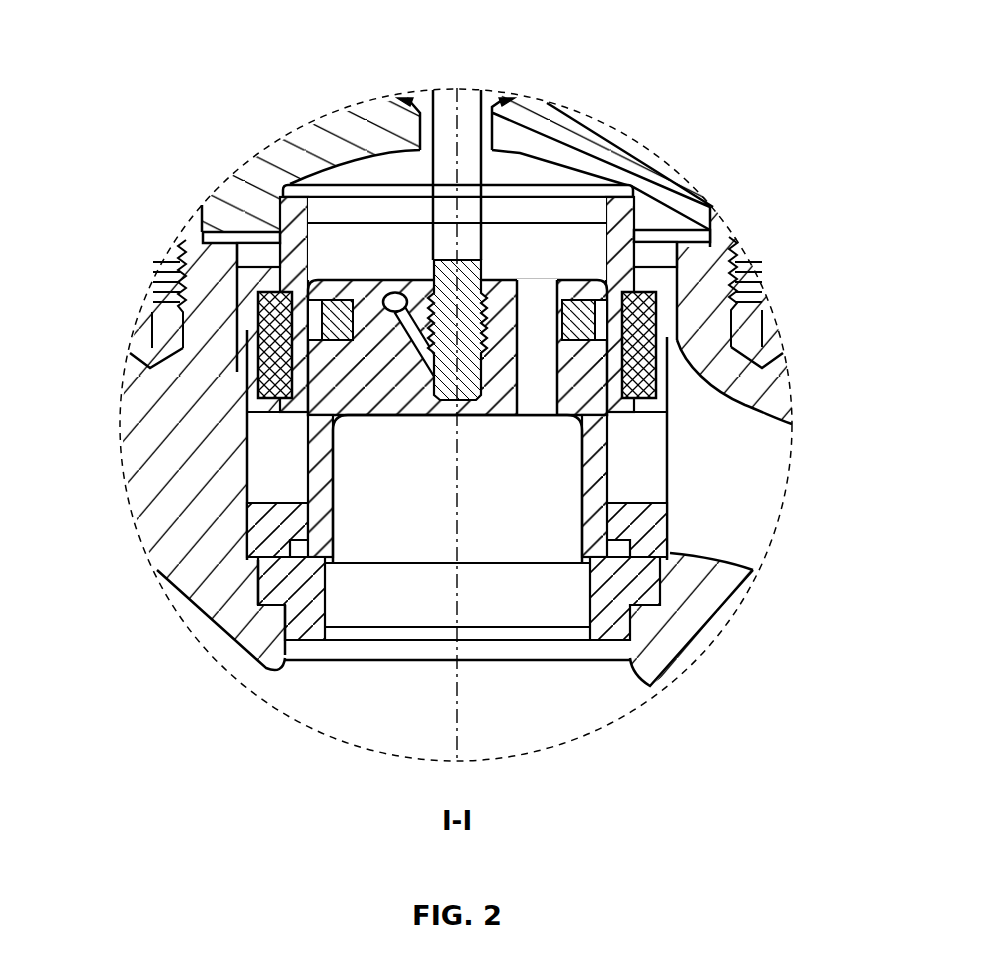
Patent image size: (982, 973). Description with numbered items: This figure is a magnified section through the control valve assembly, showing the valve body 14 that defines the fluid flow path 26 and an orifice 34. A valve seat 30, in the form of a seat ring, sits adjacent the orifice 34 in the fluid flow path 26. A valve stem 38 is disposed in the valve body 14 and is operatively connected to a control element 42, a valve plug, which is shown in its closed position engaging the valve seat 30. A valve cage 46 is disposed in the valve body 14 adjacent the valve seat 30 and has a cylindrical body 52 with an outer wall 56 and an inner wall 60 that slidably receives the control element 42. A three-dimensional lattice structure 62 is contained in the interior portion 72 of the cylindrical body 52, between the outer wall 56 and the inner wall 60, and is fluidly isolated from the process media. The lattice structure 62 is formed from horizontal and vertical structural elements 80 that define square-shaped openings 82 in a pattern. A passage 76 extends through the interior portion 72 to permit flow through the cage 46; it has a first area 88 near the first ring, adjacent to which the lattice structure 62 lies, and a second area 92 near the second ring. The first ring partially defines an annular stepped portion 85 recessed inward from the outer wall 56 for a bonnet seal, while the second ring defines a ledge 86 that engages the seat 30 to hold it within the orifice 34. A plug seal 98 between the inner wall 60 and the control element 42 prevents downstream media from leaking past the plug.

The valve body 14 is at (252, 630).
The fluid flow path 26 is at (529, 727).
The valve seat 30 is at (603, 590).
The orifice 34 is at (285, 650).
The valve stem 38 is at (470, 108).
The control element 42 is at (580, 413).
The valve cage 46 is at (690, 373).
The cylindrical body 52 is at (247, 540).
The outer wall 56 is at (678, 308).
The inner wall 60 is at (602, 243).
The three-dimensional lattice structure 62 is at (247, 557).
The interior portion 72 is at (253, 298).
The passage 76 is at (247, 512).
The structural elements 80 is at (232, 316).
The openings 82 is at (232, 340).
The annular stepped portion 85 is at (260, 245).
The ledge 86 is at (253, 555).
The first area 88 is at (266, 423).
The second area 92 is at (278, 496).
The plug seal 98 is at (333, 307).